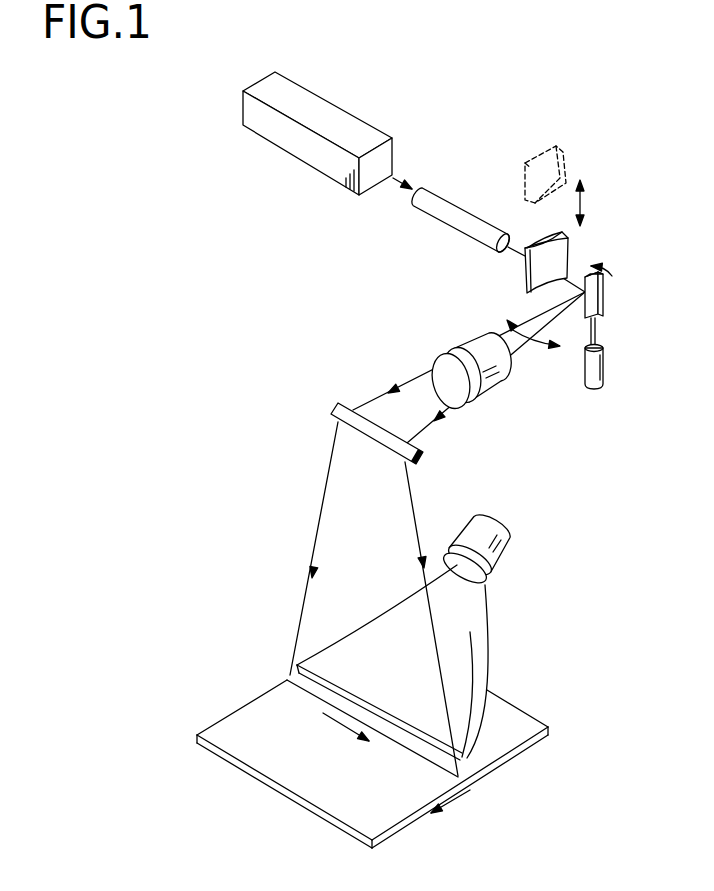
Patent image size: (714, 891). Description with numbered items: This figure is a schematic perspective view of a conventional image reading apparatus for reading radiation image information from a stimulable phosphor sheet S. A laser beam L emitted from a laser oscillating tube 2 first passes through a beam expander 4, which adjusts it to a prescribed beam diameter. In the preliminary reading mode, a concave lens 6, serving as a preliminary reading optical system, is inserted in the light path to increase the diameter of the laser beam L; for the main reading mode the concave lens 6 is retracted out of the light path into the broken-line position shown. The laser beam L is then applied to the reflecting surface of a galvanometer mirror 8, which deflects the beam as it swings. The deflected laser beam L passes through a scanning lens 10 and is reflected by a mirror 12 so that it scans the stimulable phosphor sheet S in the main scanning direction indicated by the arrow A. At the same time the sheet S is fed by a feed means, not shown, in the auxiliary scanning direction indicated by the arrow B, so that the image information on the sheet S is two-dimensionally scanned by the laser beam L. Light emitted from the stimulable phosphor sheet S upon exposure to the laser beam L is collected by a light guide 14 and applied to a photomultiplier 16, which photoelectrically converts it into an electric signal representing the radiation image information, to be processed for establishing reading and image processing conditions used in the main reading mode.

The laser oscillating tube 2 is at (315, 106).
The beam expander 4 is at (452, 212).
The concave lens 6 is at (568, 176).
The galvanometer mirror 8 is at (598, 302).
The scanning lens 10 is at (462, 347).
The mirror 12 is at (337, 402).
The light guide 14 is at (477, 630).
The photomultiplier 16 is at (492, 525).
The laser beam L is at (393, 180).
The stimulable phosphor sheet S is at (517, 712).
The main scanning direction A is at (346, 733).
The auxiliary scanning direction B is at (450, 810).